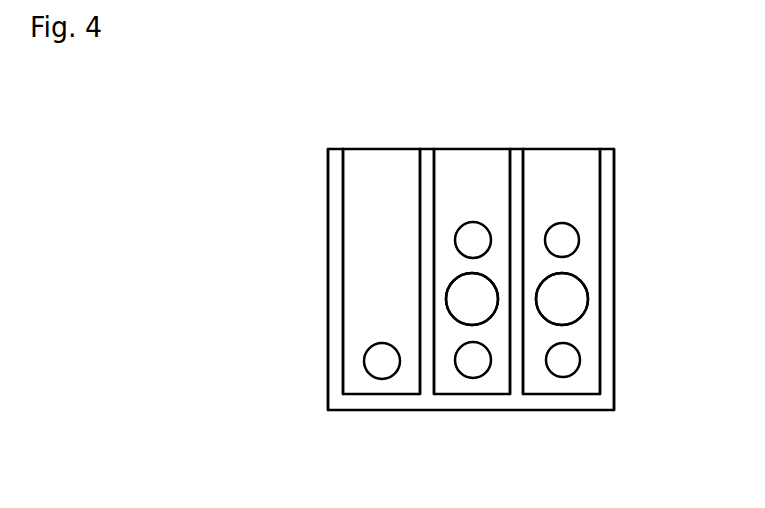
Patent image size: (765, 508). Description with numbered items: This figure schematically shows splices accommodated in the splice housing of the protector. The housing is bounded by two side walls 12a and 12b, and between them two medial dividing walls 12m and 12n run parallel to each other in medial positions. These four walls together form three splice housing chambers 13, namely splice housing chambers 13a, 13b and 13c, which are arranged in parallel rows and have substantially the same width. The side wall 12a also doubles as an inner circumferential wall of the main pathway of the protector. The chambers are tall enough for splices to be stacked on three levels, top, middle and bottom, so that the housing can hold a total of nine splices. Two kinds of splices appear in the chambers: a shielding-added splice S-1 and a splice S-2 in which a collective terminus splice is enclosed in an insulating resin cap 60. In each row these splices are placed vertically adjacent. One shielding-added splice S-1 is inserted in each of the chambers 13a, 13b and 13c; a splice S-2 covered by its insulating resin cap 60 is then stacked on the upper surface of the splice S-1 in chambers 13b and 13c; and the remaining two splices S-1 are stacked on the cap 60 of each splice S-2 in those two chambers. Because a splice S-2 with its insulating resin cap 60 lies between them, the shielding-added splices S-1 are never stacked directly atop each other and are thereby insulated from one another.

The splice housing chambers 13 is at (245, 222).
The splice housing chamber 13a is at (372, 225).
The splice housing chamber 13b is at (447, 264).
The splice housing chamber 13c is at (527, 337).
The medial dividing wall 12n is at (428, 152).
The medial dividing wall 12m is at (517, 152).
The side wall 12a is at (612, 380).
The side wall 12b is at (330, 380).
The insulating resin cap 60 is at (481, 273).
The shielding-added splice S-1 is at (474, 228).
The splice S-2 is at (482, 308).